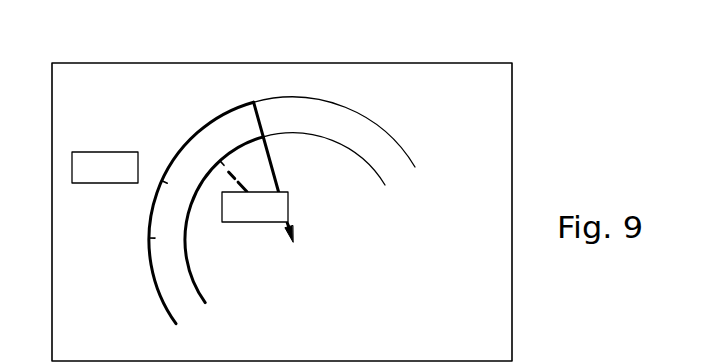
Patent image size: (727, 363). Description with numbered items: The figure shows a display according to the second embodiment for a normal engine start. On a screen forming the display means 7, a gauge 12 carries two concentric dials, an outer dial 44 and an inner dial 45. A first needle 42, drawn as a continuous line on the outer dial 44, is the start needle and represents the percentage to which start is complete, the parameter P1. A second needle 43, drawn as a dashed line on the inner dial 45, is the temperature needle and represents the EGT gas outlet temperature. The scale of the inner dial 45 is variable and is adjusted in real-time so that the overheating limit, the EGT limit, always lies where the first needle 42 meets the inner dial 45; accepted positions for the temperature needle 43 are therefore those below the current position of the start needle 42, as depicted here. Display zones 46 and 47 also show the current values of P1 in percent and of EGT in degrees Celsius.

The display means 7 is at (512, 303).
The gauge 12 is at (277, 75).
The first needle 42 is at (262, 120).
The second needle 43 is at (236, 165).
The outer dial 44 is at (180, 148).
The inner dial 45 is at (352, 152).
The display zone 46 is at (90, 152).
The display zone 47 is at (250, 223).